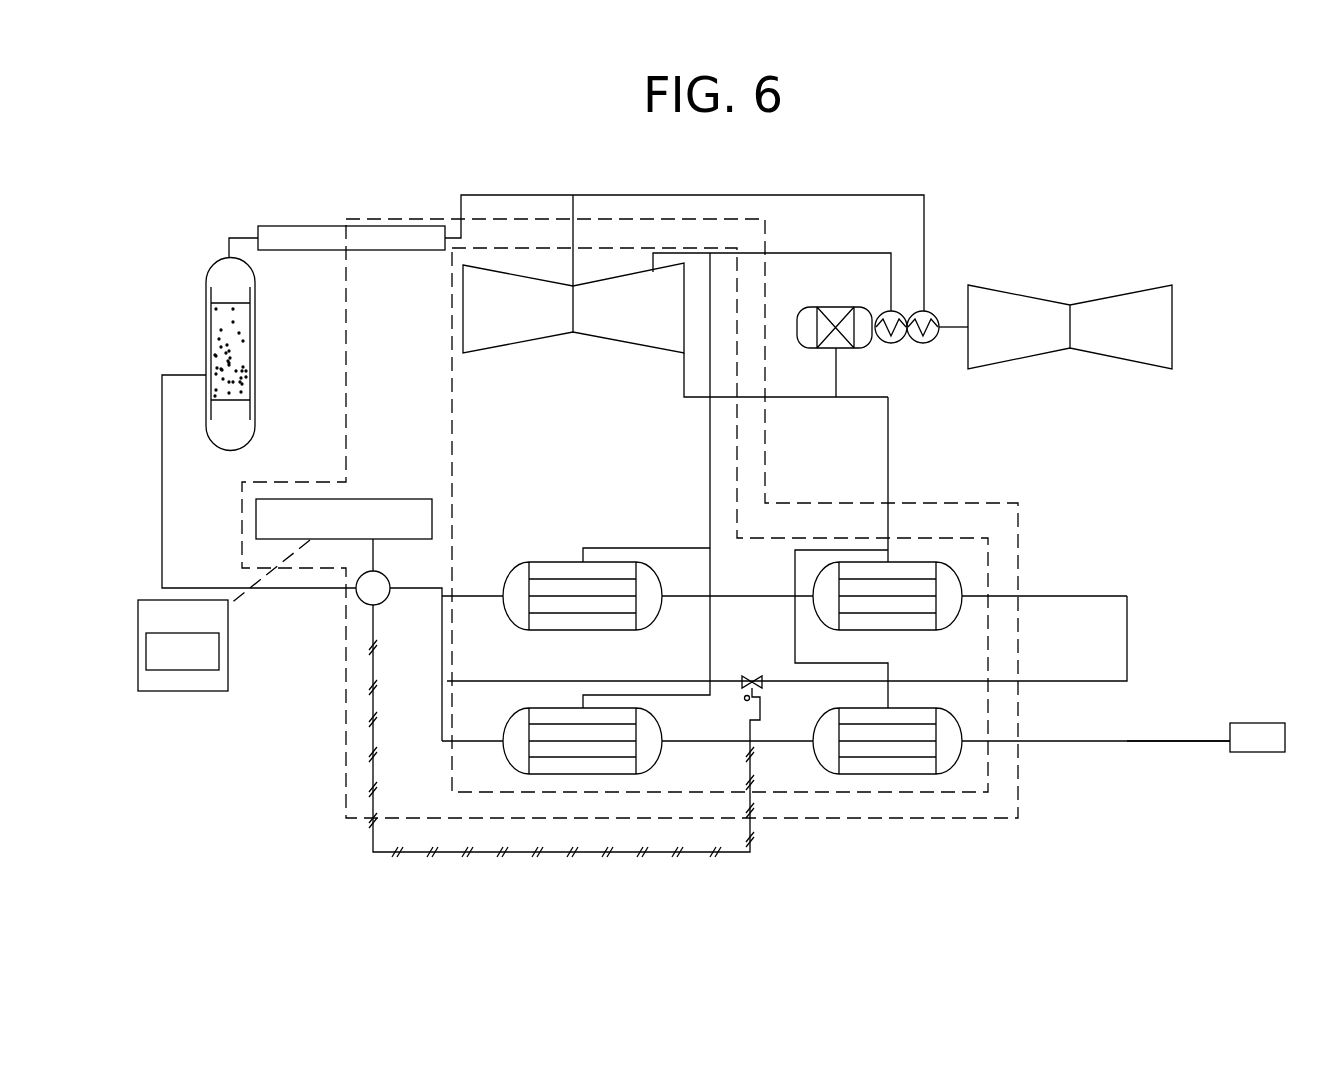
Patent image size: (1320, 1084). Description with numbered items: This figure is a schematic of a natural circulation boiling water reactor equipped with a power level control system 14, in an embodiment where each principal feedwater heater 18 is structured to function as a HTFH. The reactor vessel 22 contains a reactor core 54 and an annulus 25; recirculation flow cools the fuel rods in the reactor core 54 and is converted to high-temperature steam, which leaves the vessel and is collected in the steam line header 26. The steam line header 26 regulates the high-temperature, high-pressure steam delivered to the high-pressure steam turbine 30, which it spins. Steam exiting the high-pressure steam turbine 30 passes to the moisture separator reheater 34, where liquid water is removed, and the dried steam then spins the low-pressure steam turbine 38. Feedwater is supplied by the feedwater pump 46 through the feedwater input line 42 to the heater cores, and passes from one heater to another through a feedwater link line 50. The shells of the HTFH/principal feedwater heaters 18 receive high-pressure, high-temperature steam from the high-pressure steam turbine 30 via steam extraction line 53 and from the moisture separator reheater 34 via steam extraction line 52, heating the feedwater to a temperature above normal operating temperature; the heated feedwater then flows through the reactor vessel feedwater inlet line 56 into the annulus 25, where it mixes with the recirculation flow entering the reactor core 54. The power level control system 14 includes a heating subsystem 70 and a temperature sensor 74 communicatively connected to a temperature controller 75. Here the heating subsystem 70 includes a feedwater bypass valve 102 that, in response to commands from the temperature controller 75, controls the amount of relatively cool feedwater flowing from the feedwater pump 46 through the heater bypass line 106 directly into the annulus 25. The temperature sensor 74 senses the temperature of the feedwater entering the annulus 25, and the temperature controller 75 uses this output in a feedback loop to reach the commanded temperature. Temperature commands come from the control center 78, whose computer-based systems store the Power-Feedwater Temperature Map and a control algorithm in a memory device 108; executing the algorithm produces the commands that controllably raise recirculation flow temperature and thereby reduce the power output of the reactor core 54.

The power level control system 14 is at (765, 228).
The principal feedwater heater 18 is at (518, 578).
The reactor vessel 22 is at (206, 277).
The annulus 25 is at (250, 328).
The steam line header 26 is at (303, 230).
The high-pressure steam turbine 30 is at (502, 336).
The moisture separator reheater 34 is at (808, 318).
The low-pressure steam turbine 38 is at (1018, 349).
The feedwater input line 42 is at (1190, 740).
The feedwater pump 46 is at (1273, 752).
The feedwater link line 50 is at (732, 592).
The steam extraction line 52 is at (888, 440).
The steam extraction line 53 is at (710, 478).
The reactor core 54 is at (220, 347).
The reactor vessel feedwater inlet line 56 is at (162, 515).
The heating subsystem 70 is at (753, 752).
The temperature sensor 74 is at (390, 601).
The temperature controller 75 is at (402, 499).
The control center 78 is at (185, 693).
The feedwater bypass valve 102 is at (750, 676).
The heater bypass line 106 is at (464, 681).
The memory device 108 is at (228, 646).